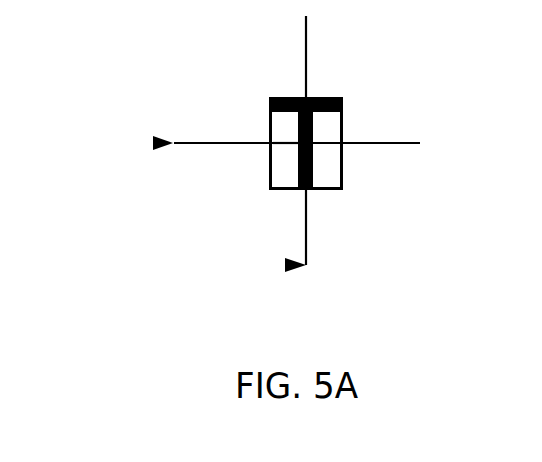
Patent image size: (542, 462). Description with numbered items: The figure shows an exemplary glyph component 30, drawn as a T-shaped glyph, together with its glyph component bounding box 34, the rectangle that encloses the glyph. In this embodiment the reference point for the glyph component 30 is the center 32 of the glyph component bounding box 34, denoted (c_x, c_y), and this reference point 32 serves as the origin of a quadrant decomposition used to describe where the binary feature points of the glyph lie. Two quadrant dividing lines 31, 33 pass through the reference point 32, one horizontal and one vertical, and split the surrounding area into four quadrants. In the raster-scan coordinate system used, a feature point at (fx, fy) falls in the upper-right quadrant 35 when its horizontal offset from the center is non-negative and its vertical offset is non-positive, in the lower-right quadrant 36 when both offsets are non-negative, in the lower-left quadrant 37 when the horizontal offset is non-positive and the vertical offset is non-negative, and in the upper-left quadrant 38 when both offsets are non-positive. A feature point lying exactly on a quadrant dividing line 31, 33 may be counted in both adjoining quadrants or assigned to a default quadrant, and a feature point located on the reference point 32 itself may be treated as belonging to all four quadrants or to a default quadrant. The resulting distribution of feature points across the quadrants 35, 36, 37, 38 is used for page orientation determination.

The glyph component 30 is at (329, 168).
The quadrant dividing line 31 is at (153, 143).
The center of the glyph component bounding box 32 is at (269, 147).
The quadrant dividing line 33 is at (285, 265).
The glyph component bounding box 34 is at (358, 115).
The upper-right quadrant 35 is at (409, 56).
The lower-right quadrant 36 is at (410, 240).
The lower-left quadrant 37 is at (236, 240).
The upper-left quadrant 38 is at (235, 56).